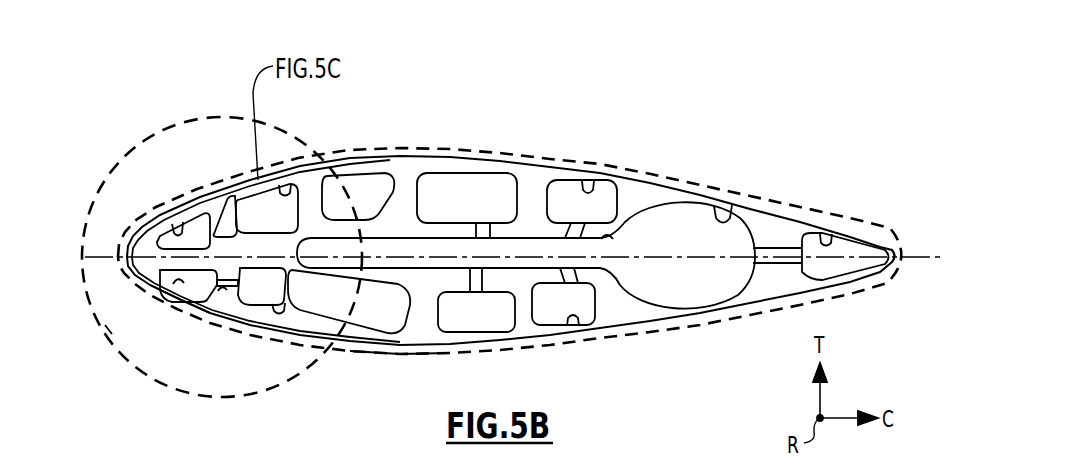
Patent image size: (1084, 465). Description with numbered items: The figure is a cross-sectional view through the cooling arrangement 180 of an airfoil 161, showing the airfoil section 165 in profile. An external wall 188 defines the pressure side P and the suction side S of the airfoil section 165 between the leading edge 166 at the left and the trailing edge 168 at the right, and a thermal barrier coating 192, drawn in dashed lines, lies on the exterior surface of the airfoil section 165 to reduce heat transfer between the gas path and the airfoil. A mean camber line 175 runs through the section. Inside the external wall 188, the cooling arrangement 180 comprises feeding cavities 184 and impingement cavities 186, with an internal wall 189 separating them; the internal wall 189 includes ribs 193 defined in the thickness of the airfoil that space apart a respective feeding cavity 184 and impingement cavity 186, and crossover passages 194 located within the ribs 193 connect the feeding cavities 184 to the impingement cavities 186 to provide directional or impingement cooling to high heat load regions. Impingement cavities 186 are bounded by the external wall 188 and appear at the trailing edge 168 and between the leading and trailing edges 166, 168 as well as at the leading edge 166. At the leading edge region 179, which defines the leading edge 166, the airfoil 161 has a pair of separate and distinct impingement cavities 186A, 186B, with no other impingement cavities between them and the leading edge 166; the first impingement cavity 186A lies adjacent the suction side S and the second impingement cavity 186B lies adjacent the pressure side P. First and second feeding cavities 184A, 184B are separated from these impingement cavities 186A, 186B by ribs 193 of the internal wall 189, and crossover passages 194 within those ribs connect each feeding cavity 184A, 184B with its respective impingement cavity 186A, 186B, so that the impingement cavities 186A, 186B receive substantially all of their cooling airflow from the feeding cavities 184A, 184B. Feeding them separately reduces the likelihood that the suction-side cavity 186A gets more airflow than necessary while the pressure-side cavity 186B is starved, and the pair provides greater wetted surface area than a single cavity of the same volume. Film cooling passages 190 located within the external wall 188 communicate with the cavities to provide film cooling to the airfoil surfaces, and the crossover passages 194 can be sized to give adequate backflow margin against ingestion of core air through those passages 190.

The airfoil 161 is at (487, 177).
The airfoil section 165 is at (395, 374).
The leading edge 166 is at (78, 323).
The trailing edge 168 is at (926, 240).
The mean camber line 175 is at (549, 255).
The leading edge region 179 is at (141, 335).
The cooling arrangement 180 is at (213, 236).
The feeding cavity 184 is at (752, 190).
The first feeding cavity 184A is at (272, 177).
The second feeding cavity 184B is at (266, 345).
The impingement cavity 186 is at (670, 251).
The first impingement cavity 186A is at (125, 205).
The second impingement cavity 186B is at (194, 352).
The external wall 188 is at (419, 174).
The internal wall 189 is at (324, 297).
The film cooling passage 190 is at (171, 154).
The thermal barrier coating 192 is at (509, 243).
The rib 193 is at (226, 248).
The crossover passage 194 is at (415, 248).
The suction side S is at (537, 141).
The pressure side P is at (547, 367).